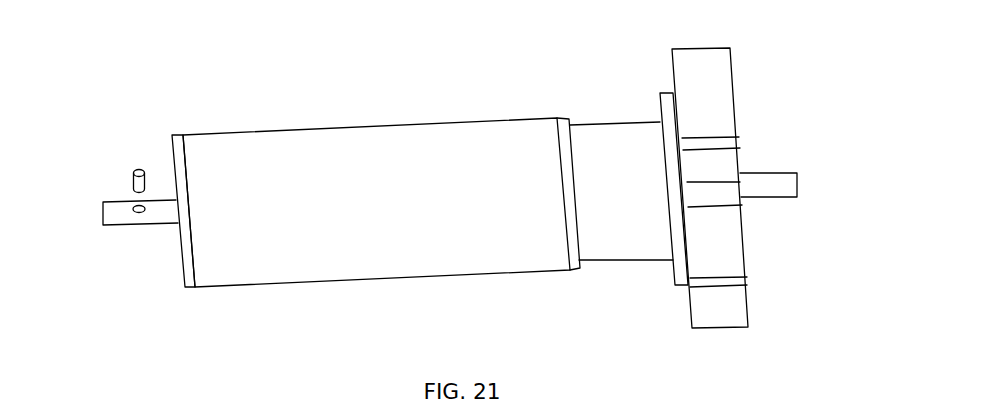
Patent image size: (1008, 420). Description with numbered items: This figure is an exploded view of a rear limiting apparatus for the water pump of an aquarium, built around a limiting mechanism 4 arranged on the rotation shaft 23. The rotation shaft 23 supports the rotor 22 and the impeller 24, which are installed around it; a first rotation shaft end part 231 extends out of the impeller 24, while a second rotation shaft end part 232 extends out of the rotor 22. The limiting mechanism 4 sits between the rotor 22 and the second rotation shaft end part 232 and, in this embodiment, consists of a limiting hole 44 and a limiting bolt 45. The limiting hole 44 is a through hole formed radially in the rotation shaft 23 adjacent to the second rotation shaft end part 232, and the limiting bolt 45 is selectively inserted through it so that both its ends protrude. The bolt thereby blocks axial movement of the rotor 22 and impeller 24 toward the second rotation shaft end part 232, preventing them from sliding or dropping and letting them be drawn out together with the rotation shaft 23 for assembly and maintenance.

The limiting mechanism 4 is at (97, 90).
The rotor 22 is at (317, 165).
The rotation shaft 23 is at (164, 221).
The impeller 24 is at (728, 98).
The limiting hole 44 is at (136, 206).
The limiting bolt 45 is at (141, 168).
The first rotation shaft end part 231 is at (788, 183).
The second rotation shaft end part 232 is at (110, 214).